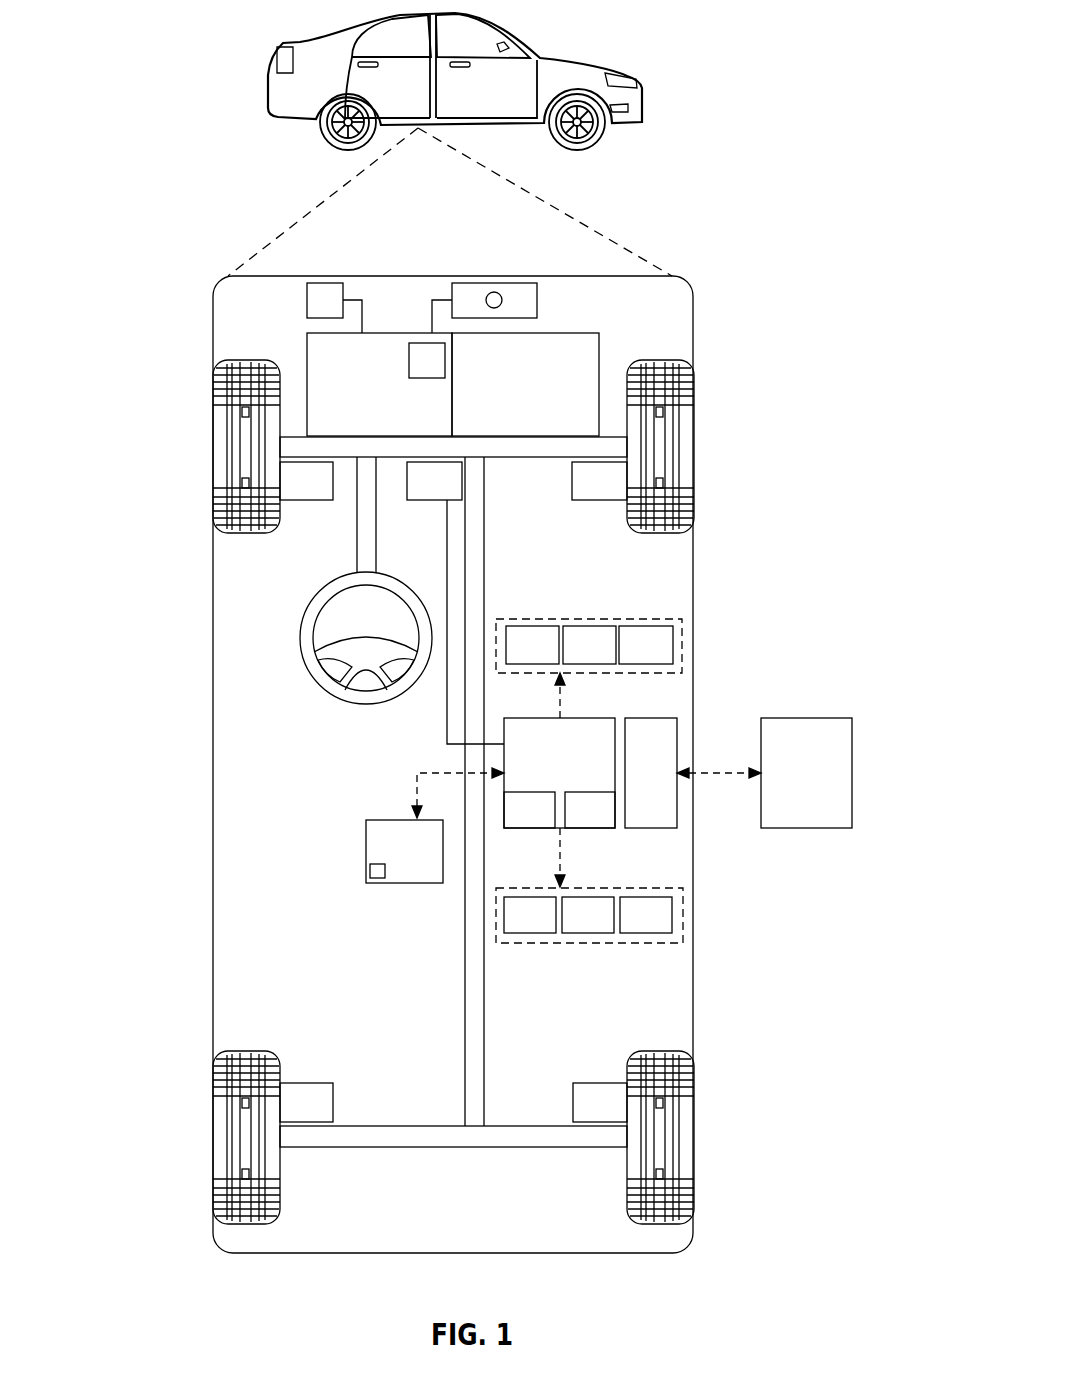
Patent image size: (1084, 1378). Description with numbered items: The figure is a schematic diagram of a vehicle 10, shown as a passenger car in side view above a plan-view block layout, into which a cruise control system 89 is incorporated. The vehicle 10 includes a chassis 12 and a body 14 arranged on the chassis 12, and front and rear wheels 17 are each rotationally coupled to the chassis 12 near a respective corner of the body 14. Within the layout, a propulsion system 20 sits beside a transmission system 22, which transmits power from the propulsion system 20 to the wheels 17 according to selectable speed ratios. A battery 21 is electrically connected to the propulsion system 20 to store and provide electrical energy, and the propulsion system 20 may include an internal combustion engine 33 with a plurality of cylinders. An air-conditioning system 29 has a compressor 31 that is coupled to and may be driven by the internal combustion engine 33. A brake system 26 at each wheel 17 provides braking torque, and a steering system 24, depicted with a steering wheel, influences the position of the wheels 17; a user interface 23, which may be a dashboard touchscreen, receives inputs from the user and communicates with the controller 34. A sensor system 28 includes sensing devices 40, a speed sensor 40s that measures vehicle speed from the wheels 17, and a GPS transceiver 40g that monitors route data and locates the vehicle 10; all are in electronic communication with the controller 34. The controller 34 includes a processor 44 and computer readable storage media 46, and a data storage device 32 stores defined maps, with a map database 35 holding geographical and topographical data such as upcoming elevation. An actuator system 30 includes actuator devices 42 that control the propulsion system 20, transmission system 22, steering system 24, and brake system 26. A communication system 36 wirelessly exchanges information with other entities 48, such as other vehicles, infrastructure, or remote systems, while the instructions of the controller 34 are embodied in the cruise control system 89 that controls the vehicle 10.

The vehicle 10 is at (277, 62).
The chassis 12 is at (465, 1035).
The body 14 is at (212, 850).
The front and rear wheels 17 is at (218, 447).
The propulsion system 20 is at (368, 427).
The battery 21 is at (325, 283).
The transmission system 22 is at (513, 427).
The user interface 23 is at (423, 496).
The steering system 24 is at (385, 515).
The brake system 26 is at (294, 496).
The sensor system 28 is at (563, 618).
The air-conditioning system 29 is at (510, 283).
The actuator system 30 is at (558, 944).
The compressor 31 is at (490, 292).
The data storage device 32 is at (393, 862).
The internal combustion engine 33 is at (409, 358).
The controller 34 is at (547, 775).
The map database 35 is at (368, 870).
The communication system 36 is at (639, 788).
The sensing devices 40 is at (520, 660).
The speed sensor 40s is at (571, 660).
The GPS transceiver 40g is at (628, 660).
The actuator devices 42 is at (518, 930).
The processor 44 is at (518, 825).
The computer readable storage device or media 46 is at (578, 825).
The other entities 48 is at (795, 787).
The cruise control system 89 is at (746, 263).